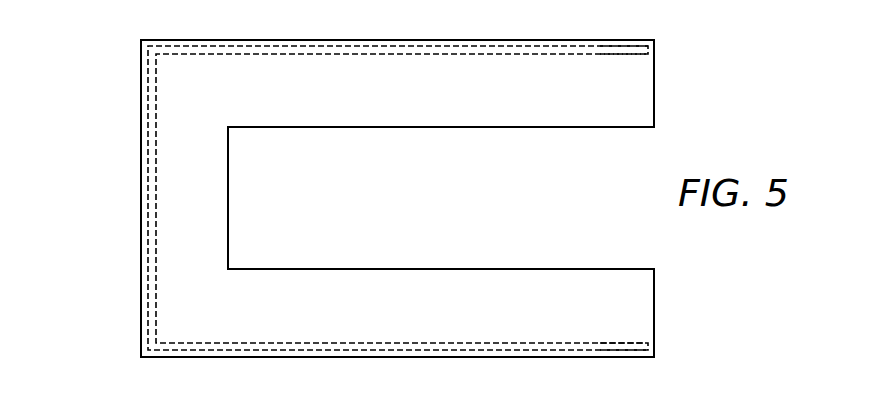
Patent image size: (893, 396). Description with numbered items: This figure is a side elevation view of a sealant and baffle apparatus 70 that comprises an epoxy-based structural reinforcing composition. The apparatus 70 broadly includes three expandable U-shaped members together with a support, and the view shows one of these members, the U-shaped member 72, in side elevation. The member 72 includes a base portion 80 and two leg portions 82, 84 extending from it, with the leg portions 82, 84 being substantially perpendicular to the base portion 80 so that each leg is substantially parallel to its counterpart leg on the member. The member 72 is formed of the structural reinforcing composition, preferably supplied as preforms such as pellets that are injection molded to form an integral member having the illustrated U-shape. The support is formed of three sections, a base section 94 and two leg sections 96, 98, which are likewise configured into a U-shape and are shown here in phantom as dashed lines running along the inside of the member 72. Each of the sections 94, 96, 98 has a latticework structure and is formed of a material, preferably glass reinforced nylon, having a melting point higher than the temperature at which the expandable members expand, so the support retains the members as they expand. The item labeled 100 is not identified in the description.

The sealant and baffle apparatus 70 is at (99, 52).
The U-shaped member 72 is at (121, 177).
The base portion 80 is at (168, 208).
The leg portion 82 is at (387, 112).
The leg portion 84 is at (417, 281).
The base section 94 is at (141, 278).
The leg section 96 is at (603, 52).
The leg section 98 is at (595, 340).
The bottom edge 100 is at (397, 376).